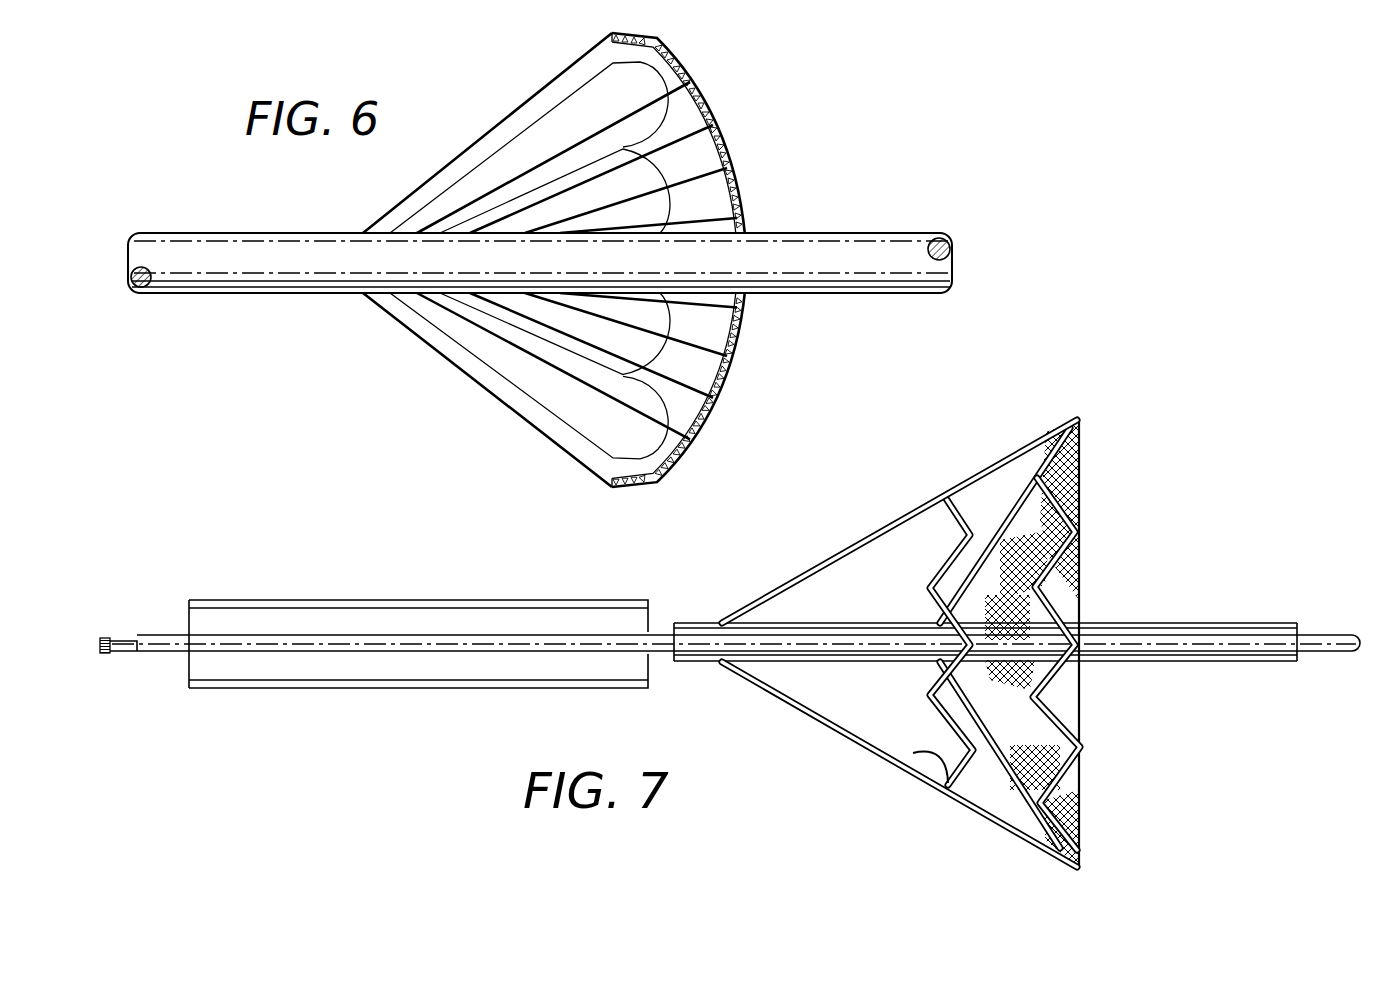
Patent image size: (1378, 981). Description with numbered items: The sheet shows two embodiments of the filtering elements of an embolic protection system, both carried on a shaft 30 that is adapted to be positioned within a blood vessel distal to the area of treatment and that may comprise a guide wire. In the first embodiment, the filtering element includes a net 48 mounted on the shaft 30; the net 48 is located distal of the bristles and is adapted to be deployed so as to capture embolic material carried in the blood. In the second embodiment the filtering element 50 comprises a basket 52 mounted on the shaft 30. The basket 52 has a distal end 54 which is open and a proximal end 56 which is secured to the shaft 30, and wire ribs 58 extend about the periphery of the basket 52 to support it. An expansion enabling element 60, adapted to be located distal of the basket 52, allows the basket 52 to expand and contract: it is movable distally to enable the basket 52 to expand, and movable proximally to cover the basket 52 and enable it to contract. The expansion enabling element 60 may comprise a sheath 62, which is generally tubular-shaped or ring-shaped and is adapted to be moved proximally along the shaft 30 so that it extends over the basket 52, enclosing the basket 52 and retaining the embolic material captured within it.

In FIG. 6, the shaft 30 is at (783, 250).
In FIG. 7, the shaft 30 is at (1332, 634).
In FIG. 6, the net 48 is at (712, 107).
In FIG. 7, the filtering element 50 is at (1050, 520).
In FIG. 7, the basket 52 is at (995, 797).
In FIG. 7, the distal end 54 is at (800, 603).
In FIG. 7, the proximal end 56 is at (1082, 698).
In FIG. 7, the wire ribs 58 is at (907, 753).
In FIG. 7, the expansion enabling element 60 is at (240, 608).
In FIG. 7, the sheath 62 is at (322, 690).